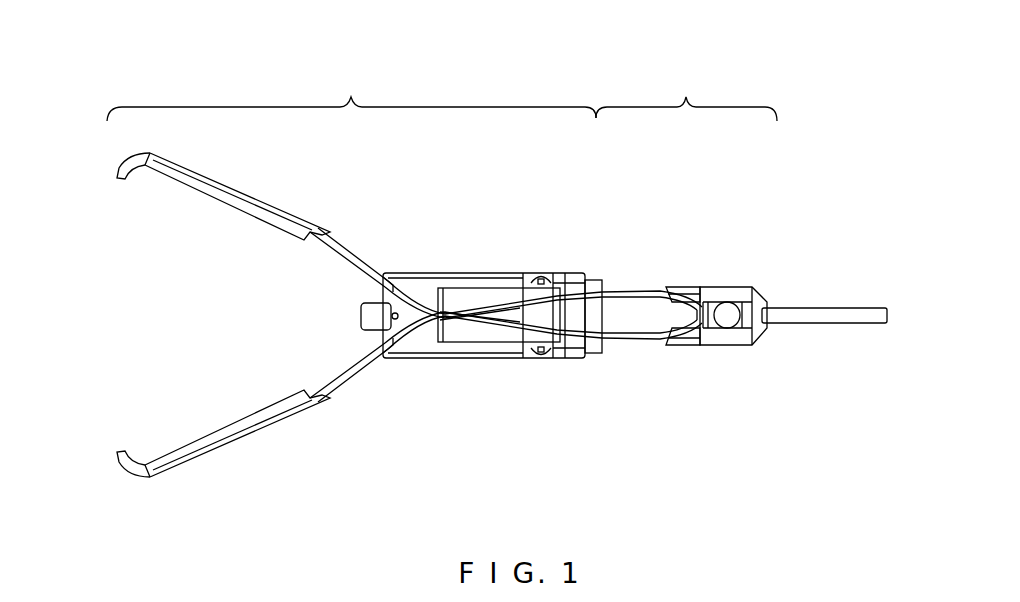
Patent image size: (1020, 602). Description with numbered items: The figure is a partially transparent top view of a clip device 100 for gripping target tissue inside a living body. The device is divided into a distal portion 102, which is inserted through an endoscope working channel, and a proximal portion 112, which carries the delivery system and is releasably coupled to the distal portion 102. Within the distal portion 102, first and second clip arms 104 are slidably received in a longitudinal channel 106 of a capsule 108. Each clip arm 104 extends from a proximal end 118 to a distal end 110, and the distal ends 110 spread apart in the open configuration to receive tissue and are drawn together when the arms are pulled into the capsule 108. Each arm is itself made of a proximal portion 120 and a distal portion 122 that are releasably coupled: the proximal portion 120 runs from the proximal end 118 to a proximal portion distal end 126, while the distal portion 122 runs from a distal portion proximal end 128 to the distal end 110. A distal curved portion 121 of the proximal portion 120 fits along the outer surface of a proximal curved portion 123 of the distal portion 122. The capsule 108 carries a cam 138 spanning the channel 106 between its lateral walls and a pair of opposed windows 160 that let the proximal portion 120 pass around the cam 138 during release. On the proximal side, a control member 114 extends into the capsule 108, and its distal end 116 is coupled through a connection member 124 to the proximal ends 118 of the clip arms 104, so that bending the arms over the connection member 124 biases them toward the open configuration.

The clip device 100 is at (107, 70).
The distal portion 102 is at (351, 98).
The proximal portion 112 is at (686, 98).
The distal ends 110 is at (112, 170).
The clip arms 104 is at (233, 207).
The distal portion of clip arm 122 is at (357, 367).
The proximal portion distal end 126 is at (381, 357).
The proximal curved portion 123 is at (360, 333).
The longitudinal channel 106 is at (475, 282).
The capsule 108 is at (437, 275).
The proximal portion of clip arm 120 is at (518, 353).
The cam 138 is at (565, 353).
The distal portion proximal end 128 is at (468, 347).
The distal curved portion 121 is at (437, 350).
The windows 160 is at (503, 350).
The connection member 124 is at (624, 298).
The proximal ends 118 is at (690, 290).
The distal end of control member 116 is at (735, 330).
The control member 114 is at (790, 310).